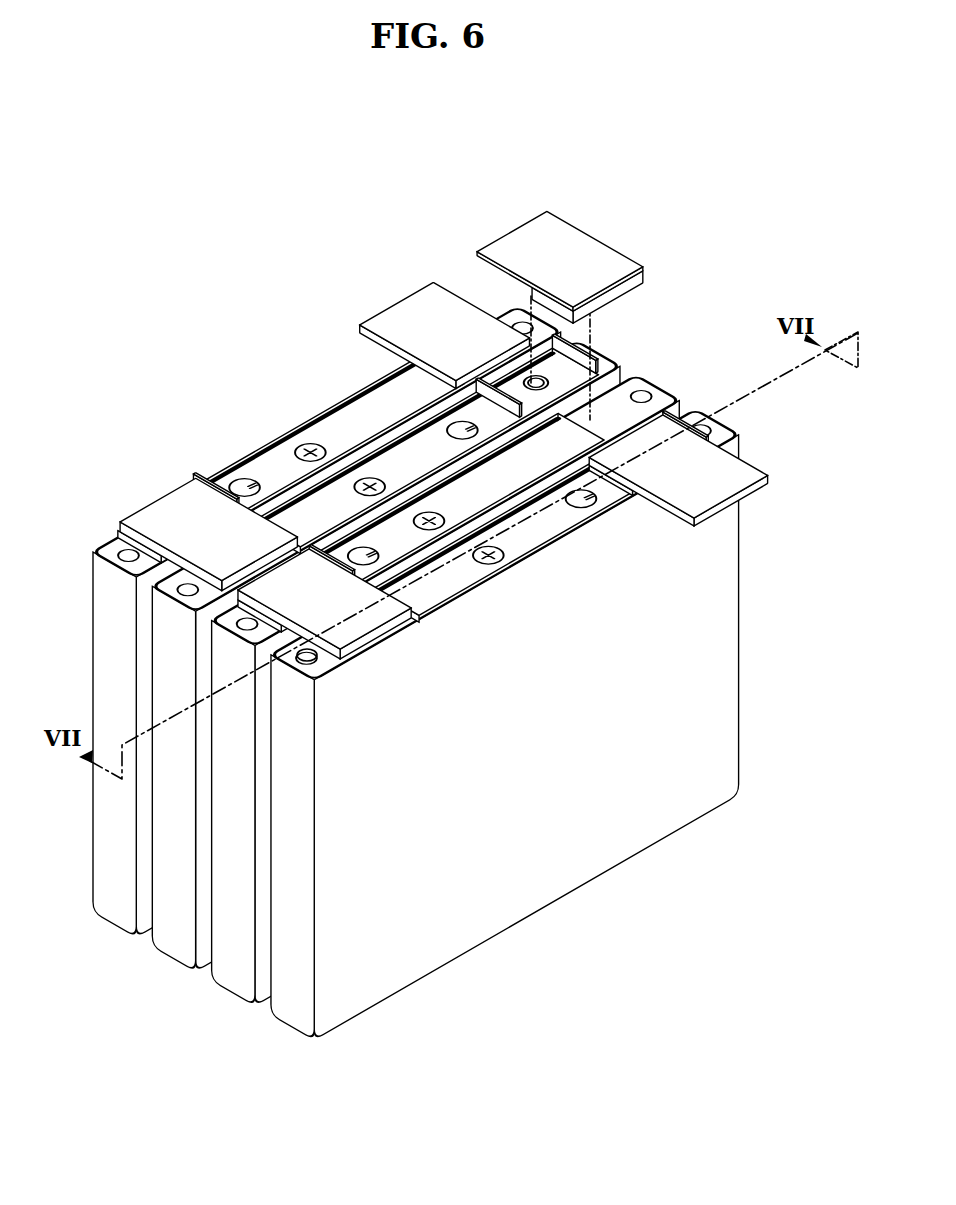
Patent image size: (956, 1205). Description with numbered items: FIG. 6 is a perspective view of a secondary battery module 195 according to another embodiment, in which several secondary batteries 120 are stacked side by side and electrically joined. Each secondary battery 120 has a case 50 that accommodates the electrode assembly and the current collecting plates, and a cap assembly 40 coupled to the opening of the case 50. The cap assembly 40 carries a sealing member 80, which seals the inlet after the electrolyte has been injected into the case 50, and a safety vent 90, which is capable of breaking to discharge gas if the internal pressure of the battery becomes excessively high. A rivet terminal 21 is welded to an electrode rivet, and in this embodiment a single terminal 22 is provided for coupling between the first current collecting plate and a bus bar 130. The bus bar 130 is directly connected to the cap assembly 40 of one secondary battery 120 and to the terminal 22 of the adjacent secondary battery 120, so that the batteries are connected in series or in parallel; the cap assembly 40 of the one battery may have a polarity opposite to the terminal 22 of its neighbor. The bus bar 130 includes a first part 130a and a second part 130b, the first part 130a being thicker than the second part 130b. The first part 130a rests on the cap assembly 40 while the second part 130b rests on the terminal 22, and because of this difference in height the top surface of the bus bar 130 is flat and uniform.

The battery module 195 is at (262, 350).
The secondary battery 120 is at (108, 935).
The case 50 is at (103, 622).
The rivet terminal 21 is at (352, 676).
The terminal 22 is at (488, 402).
The cap assembly 40 is at (362, 407).
The sealing member 80 is at (242, 476).
The safety vent 90 is at (313, 443).
The bus bar 130 is at (596, 238).
The first part 130a is at (586, 322).
The second part 130b is at (485, 263).